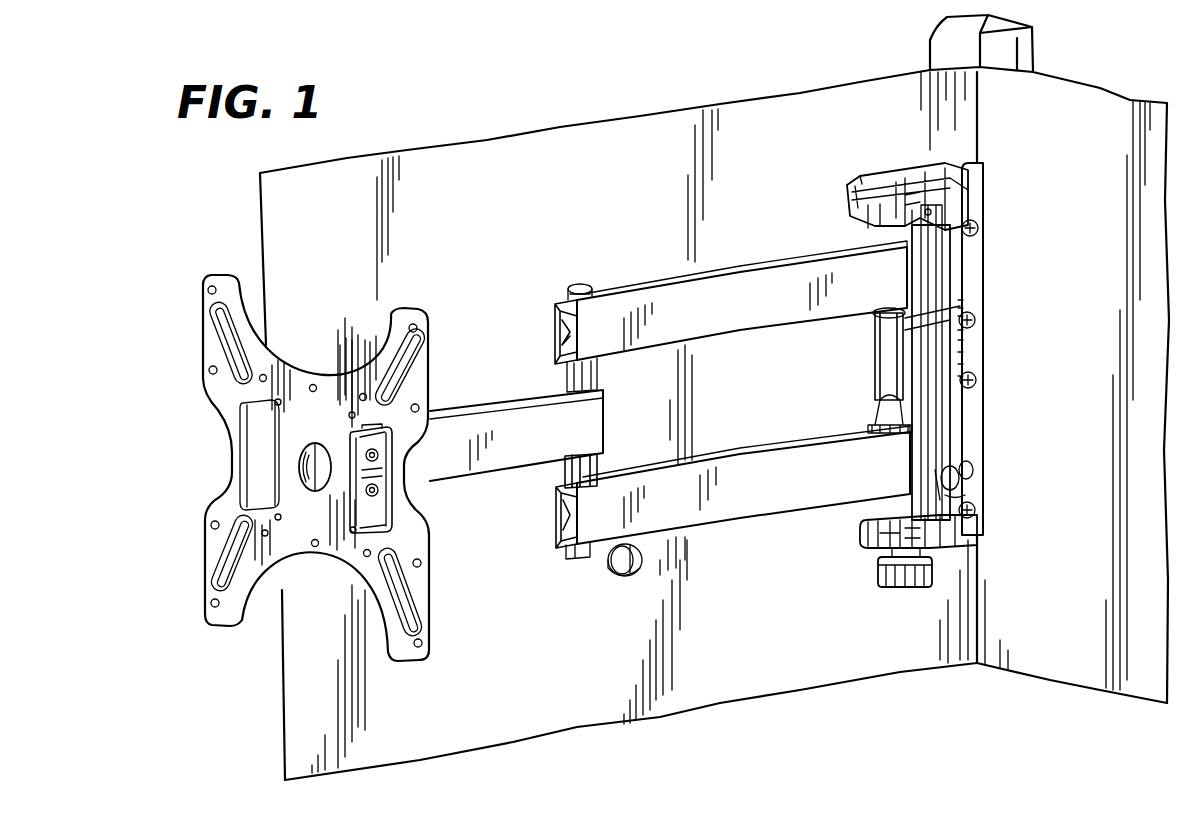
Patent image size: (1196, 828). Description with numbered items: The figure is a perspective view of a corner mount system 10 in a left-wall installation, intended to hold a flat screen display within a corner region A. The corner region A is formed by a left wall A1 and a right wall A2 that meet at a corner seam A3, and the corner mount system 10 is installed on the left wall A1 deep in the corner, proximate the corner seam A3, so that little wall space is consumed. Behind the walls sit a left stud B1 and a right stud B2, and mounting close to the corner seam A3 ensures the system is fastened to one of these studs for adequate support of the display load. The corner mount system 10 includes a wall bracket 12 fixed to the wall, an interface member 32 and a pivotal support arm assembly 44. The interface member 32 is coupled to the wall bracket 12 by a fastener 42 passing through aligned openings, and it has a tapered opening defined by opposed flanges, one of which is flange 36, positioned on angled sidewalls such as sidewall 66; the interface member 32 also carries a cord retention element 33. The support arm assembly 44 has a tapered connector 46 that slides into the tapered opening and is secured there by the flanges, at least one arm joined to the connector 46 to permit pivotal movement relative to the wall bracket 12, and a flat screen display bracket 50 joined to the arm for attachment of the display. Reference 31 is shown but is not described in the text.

The corner mount system 10 is at (538, 185).
The wall bracket 12 is at (985, 205).
The pivot pin 31 is at (960, 306).
The interface member 32 is at (855, 186).
The cord retention element 33 is at (897, 578).
The flange 36 is at (978, 532).
The fastener 42 is at (975, 352).
The support arm assembly 44 is at (533, 592).
The tapered connector 46 is at (665, 302).
The flat screen display bracket 50 is at (228, 493).
The sidewall 66 is at (950, 490).
The corner region A is at (967, 687).
The left wall A1 is at (777, 664).
The right wall A2 is at (1070, 658).
The corner seam A3 is at (973, 622).
The left stud B1 is at (940, 55).
The right stud B2 is at (1035, 45).